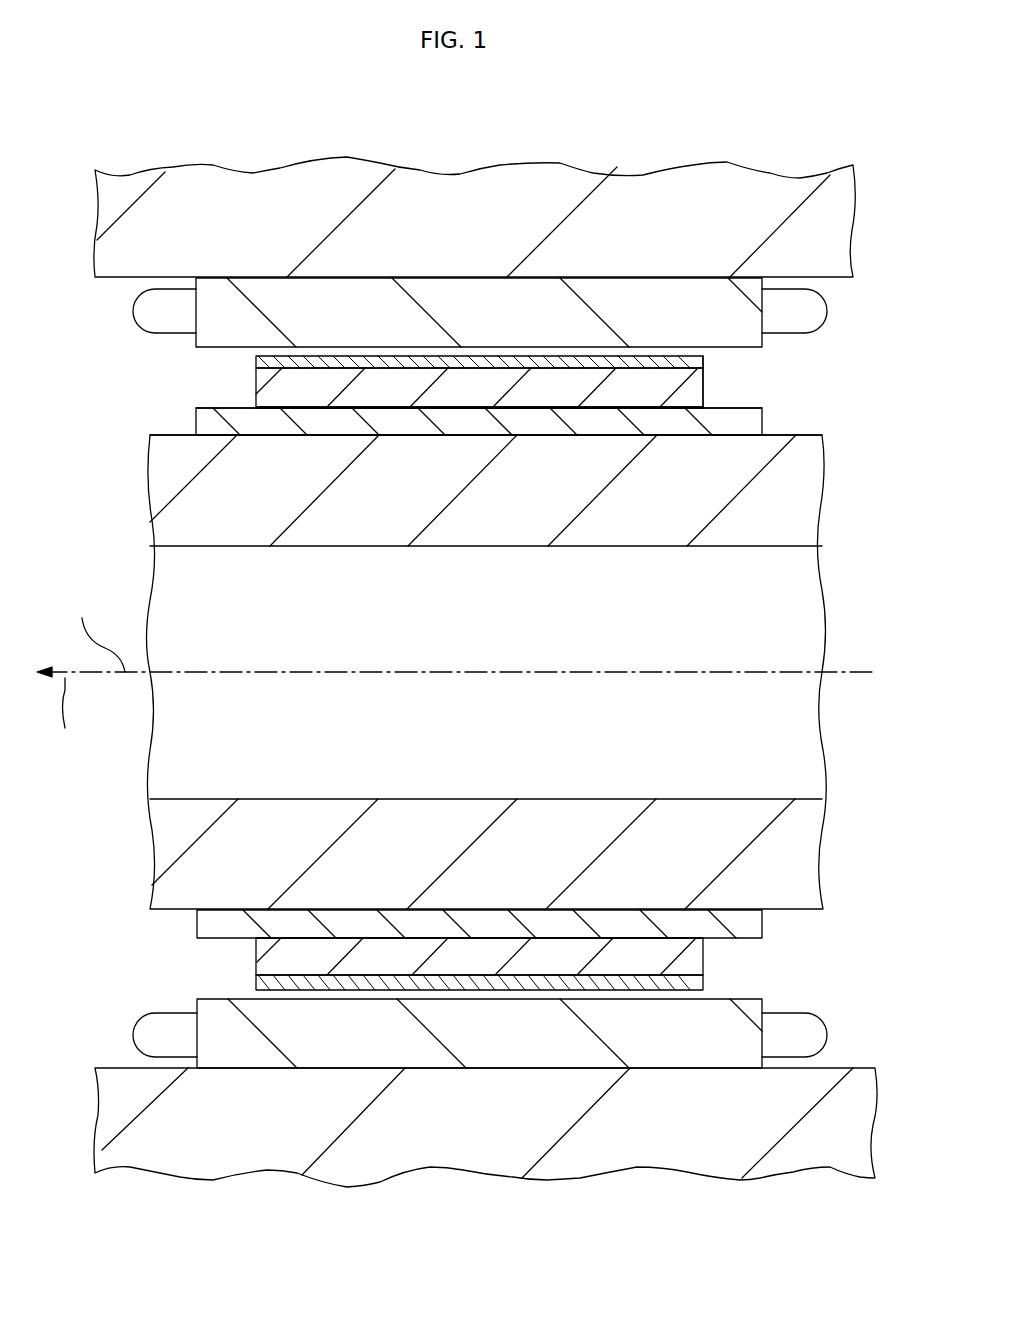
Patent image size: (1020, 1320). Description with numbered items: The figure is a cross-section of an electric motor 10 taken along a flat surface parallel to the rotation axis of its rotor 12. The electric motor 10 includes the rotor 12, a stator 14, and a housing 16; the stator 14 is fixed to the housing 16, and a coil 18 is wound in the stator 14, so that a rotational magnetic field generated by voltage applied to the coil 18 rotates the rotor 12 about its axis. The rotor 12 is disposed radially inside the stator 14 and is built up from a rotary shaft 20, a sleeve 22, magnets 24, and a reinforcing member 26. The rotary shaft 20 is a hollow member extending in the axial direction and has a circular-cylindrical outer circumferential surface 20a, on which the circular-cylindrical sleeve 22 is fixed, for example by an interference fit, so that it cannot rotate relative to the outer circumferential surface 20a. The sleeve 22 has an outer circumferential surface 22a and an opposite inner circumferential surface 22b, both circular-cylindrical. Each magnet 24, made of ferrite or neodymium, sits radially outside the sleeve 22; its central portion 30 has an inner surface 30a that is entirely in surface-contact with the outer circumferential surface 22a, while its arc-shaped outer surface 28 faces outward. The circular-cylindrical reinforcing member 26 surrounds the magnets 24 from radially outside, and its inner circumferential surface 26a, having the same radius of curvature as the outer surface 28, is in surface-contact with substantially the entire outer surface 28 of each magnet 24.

The electric motor 10 is at (838, 117).
The rotor 12 is at (842, 402).
The stator 14 is at (849, 310).
The housing 16 is at (490, 229).
The coil 18 is at (146, 310).
The rotary shaft 20 is at (400, 506).
The outer circumferential surface 20a is at (788, 434).
The sleeve 22 is at (198, 422).
The outer circumferential surface 22a is at (232, 407).
The inner circumferential surface 22b is at (207, 440).
The magnet 24 is at (524, 408).
The reinforcing member 26 is at (705, 358).
The inner circumferential surface 26a is at (690, 386).
The outer surface 28 is at (375, 365).
The central portion 30 is at (481, 401).
The inner surface 30a is at (267, 408).